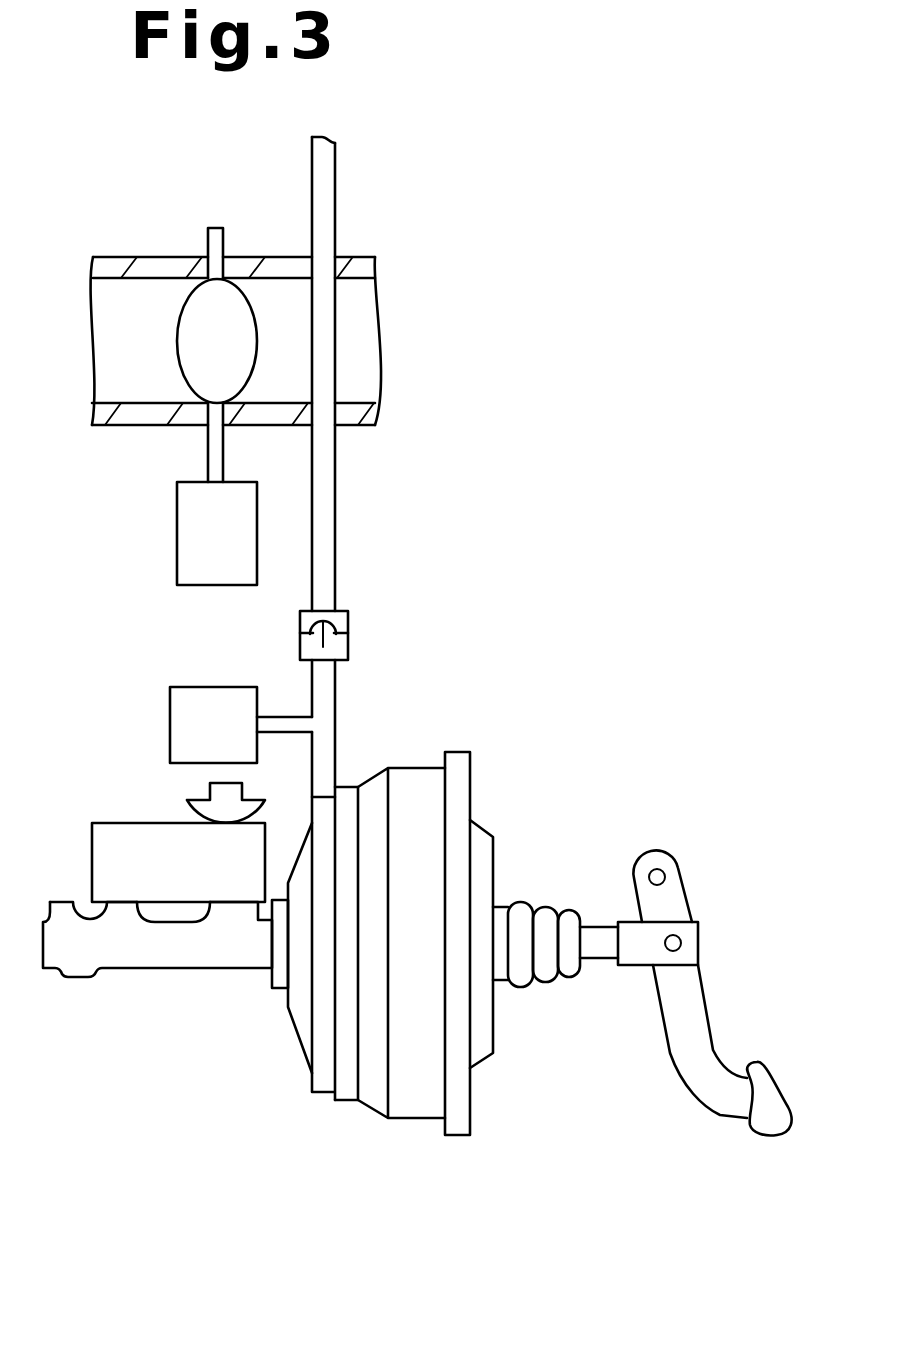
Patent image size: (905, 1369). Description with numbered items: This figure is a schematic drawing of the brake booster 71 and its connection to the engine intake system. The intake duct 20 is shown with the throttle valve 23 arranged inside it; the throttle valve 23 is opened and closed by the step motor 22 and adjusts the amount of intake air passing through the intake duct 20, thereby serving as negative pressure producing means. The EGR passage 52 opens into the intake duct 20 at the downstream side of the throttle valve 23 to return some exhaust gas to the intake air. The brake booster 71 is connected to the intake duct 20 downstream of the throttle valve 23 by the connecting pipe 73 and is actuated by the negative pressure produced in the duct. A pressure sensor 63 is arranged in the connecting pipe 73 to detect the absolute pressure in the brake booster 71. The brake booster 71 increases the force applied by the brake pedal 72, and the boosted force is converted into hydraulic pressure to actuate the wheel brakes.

The intake duct 20 is at (152, 256).
The throttle valve 23 is at (184, 338).
The step motor 22 is at (177, 533).
The EGR passage 52 is at (337, 180).
The connecting pipe 73 is at (337, 572).
The pressure sensor 63 is at (169, 712).
The brake booster 71 is at (295, 1264).
The brake pedal 72 is at (777, 1078).